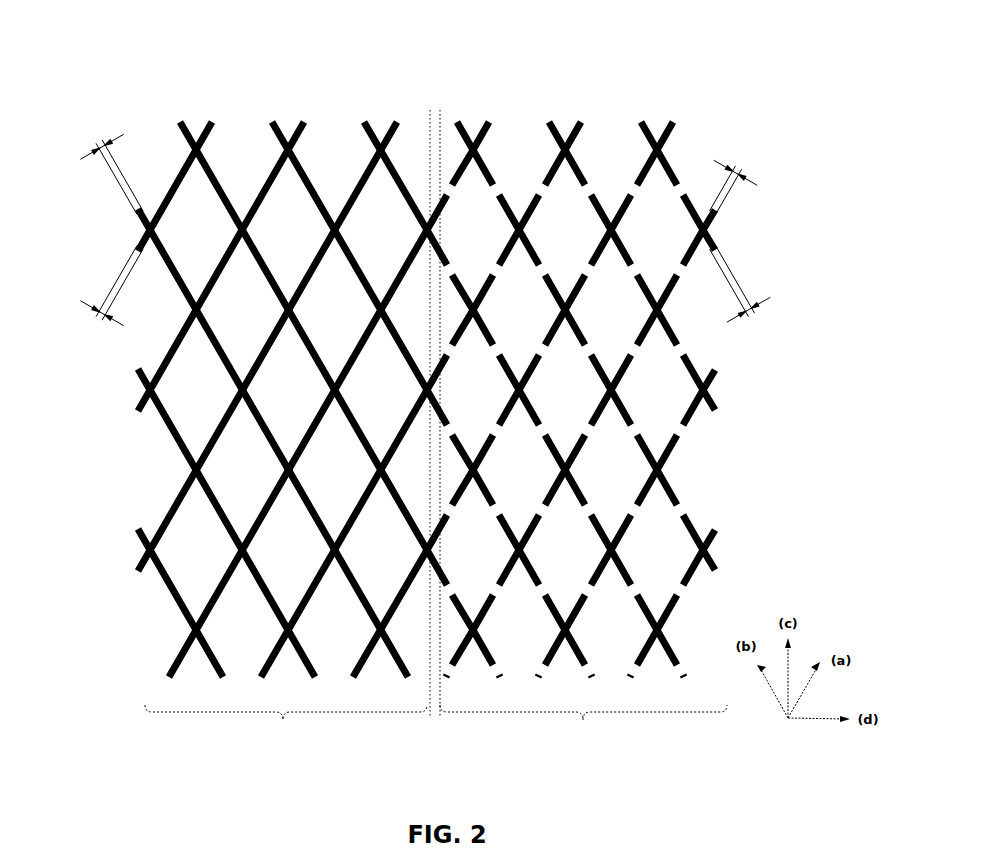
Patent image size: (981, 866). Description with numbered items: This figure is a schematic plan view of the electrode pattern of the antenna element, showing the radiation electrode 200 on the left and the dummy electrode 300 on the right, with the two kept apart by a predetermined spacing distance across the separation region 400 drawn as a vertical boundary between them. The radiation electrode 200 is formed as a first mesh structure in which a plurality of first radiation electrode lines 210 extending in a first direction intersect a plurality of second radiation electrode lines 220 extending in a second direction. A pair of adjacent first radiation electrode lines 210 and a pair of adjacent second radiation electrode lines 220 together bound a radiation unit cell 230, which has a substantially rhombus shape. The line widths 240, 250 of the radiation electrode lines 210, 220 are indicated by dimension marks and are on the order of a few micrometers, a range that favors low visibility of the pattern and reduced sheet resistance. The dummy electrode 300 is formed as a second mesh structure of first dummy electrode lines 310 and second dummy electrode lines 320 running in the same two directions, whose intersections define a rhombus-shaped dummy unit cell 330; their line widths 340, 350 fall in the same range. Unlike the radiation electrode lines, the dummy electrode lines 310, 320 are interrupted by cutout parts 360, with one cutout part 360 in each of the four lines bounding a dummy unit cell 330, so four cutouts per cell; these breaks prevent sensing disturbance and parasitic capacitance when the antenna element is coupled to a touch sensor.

The radiation electrode 200 is at (256, 381).
The first radiation electrode lines 210 is at (353, 197).
The second radiation electrode lines 220 is at (392, 147).
The radiation unit cell 230 is at (382, 229).
The line width of first radiation electrode line 240 is at (106, 165).
The line width of second radiation electrode line 250 is at (106, 297).
The dummy electrode 300 is at (616, 392).
The first dummy electrode lines 310 is at (550, 175).
The second dummy electrode lines 320 is at (588, 165).
The dummy unit cell 330 is at (475, 229).
The line width of first dummy electrode line 340 is at (745, 292).
The line width of second dummy electrode line 350 is at (741, 177).
The cutout part 360 is at (692, 434).
The separation region 400 is at (432, 432).